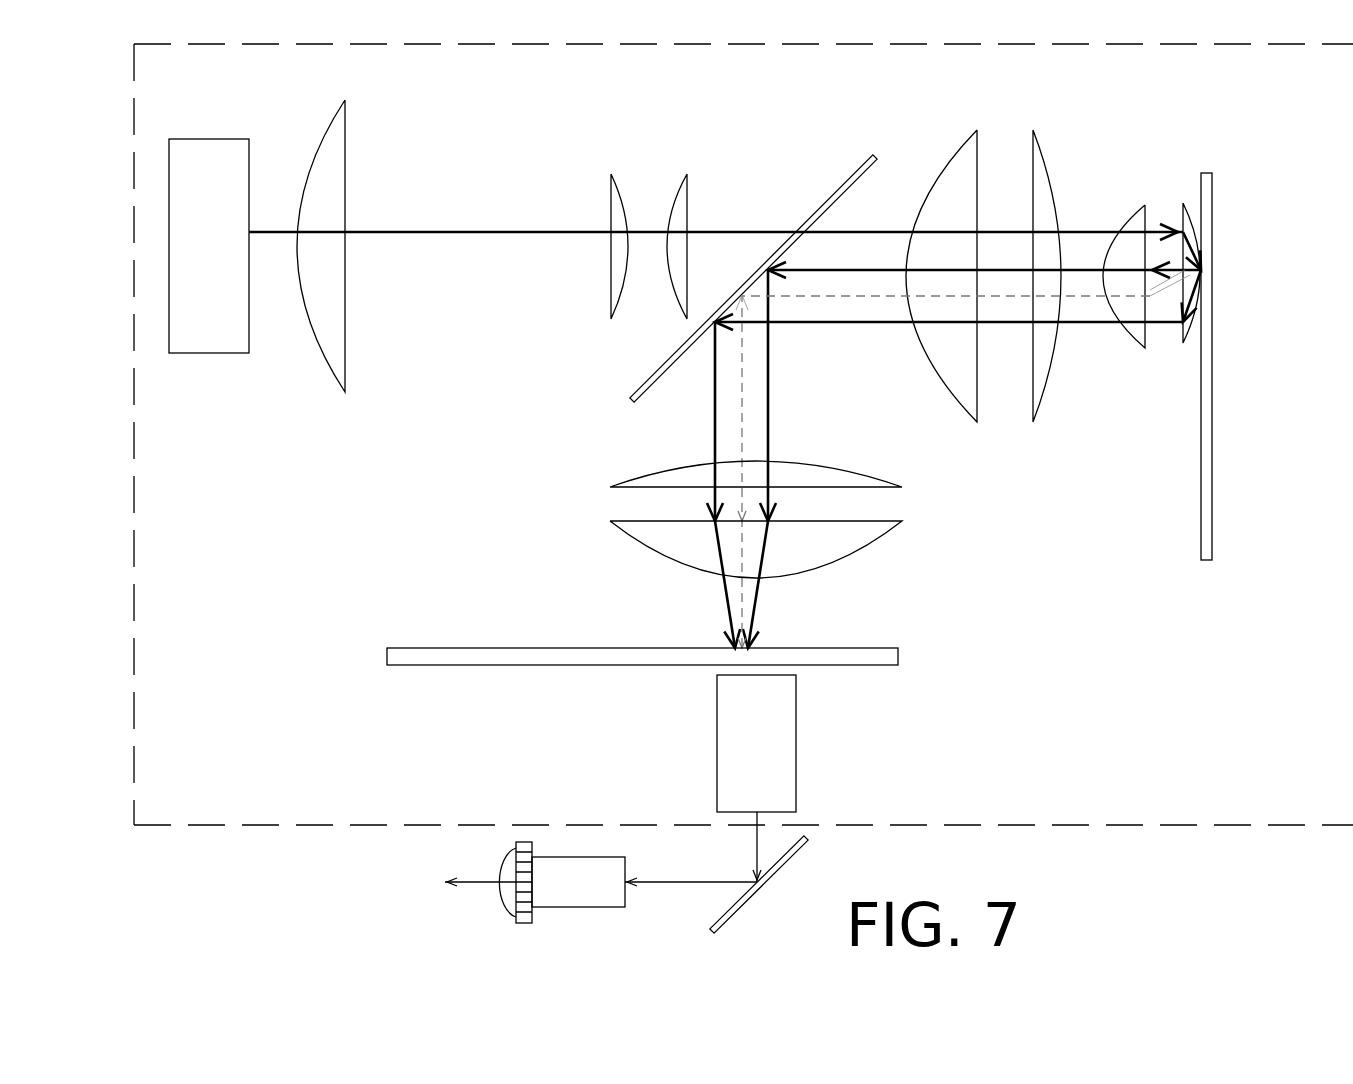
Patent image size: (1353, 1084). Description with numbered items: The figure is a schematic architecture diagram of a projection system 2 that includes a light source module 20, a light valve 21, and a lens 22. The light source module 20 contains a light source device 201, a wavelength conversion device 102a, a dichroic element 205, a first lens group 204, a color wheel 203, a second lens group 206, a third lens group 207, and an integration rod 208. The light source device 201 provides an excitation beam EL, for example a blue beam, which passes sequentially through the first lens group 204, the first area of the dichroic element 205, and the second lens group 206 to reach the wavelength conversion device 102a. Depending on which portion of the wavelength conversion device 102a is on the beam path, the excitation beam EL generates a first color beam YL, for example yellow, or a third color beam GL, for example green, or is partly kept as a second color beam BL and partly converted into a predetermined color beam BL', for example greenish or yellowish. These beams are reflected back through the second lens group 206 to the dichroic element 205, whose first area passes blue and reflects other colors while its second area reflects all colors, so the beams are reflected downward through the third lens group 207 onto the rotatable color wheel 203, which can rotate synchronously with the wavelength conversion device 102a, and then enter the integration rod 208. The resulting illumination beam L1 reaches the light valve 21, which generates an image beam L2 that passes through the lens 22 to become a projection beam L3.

The projection system 2 is at (78, 100).
The light source module 20 is at (134, 497).
The light source device 201 is at (215, 160).
The color wheel 203 is at (428, 660).
The first lens group 204 is at (686, 103).
The dichroic element 205 is at (862, 162).
The second lens group 206 is at (1187, 112).
The third lens group 207 is at (925, 461).
The integration rod 208 is at (770, 750).
The light valve 21 is at (790, 855).
The lens 22 is at (575, 908).
The wavelength conversion device 102a is at (1212, 538).
The excitation beam EL is at (516, 228).
The second color beam BL is at (954, 459).
The predetermined color beam BL' is at (963, 459).
The first color beam YL is at (970, 455).
The third color beam GL is at (852, 270).
The illumination beam L1 is at (755, 848).
The image beam L2 is at (668, 884).
The projection beam L3 is at (470, 886).